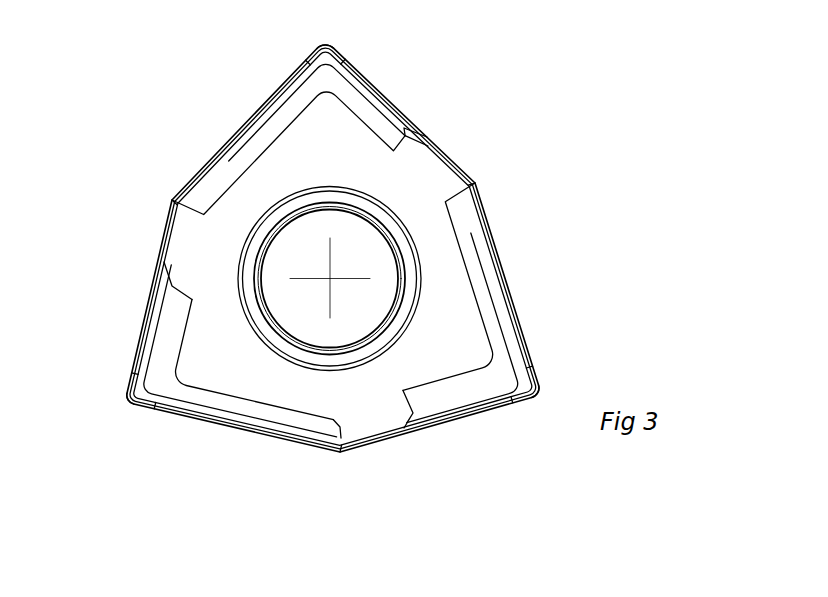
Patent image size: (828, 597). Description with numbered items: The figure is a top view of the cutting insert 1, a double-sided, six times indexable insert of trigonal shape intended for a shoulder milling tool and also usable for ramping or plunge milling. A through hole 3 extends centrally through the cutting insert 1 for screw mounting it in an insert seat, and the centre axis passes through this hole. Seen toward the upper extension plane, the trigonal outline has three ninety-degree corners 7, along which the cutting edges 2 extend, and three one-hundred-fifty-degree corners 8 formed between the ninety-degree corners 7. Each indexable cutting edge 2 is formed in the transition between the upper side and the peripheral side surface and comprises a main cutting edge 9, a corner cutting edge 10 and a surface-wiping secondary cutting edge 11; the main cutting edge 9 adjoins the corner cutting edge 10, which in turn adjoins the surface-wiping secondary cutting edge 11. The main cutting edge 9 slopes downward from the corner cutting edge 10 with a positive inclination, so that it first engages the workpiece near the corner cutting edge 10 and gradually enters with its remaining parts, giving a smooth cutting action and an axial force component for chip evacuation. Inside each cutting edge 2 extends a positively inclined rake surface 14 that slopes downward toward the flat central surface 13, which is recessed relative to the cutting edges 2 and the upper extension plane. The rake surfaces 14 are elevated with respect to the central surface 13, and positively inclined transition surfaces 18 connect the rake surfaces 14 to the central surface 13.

The cutting insert 1 is at (449, 108).
The cutting edge 2 is at (306, 63).
The through hole 3 is at (358, 216).
The 90° corner 7 is at (324, 46).
The 150° corner 8 is at (170, 197).
The main cutting edge 9 is at (262, 106).
The corner cutting edge 10 is at (330, 44).
The surface-wiping secondary cutting edge 11 is at (368, 72).
The central surface 13 is at (327, 164).
The rake surface 14 is at (234, 149).
The transition surface 18 is at (377, 122).